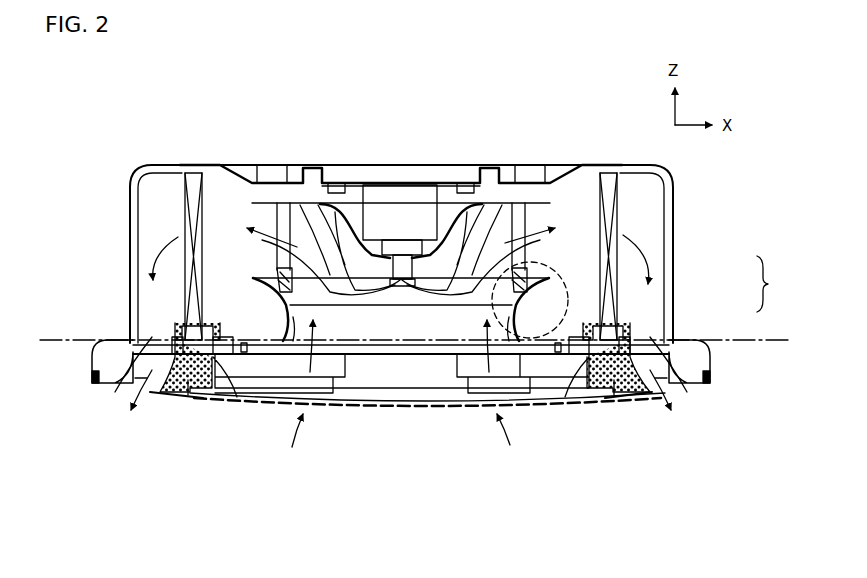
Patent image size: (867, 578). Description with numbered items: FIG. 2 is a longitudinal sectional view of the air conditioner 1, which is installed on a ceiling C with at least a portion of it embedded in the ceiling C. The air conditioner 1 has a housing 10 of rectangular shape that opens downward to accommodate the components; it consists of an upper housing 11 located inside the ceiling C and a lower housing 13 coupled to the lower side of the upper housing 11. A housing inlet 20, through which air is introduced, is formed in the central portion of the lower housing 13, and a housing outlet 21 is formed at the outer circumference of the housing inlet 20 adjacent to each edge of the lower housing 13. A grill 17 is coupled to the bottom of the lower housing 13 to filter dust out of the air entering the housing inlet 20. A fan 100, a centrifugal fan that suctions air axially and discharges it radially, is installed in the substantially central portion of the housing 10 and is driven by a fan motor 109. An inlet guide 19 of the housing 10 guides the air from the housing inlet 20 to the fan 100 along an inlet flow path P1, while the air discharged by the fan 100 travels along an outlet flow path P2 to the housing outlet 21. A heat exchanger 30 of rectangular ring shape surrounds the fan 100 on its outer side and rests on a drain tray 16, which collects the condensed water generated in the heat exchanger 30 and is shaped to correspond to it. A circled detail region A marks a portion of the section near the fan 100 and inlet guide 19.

The air conditioner 1 is at (349, 76).
The housing 10 is at (458, 259).
The upper housing 11 is at (674, 255).
The lower housing 13 is at (703, 343).
The drain tray 16 is at (203, 354).
The grill 17 is at (197, 402).
The inlet guide 19 is at (292, 345).
The housing inlet 20 is at (400, 404).
The housing outlet 21 is at (142, 380).
The heat exchanger 30 is at (203, 192).
The fan 100 is at (355, 195).
The fan motor 109 is at (401, 193).
The inlet flow path P1 is at (312, 235).
The outlet flow path P2 is at (152, 308).
The detail region A is at (548, 284).
The ceiling C is at (80, 343).